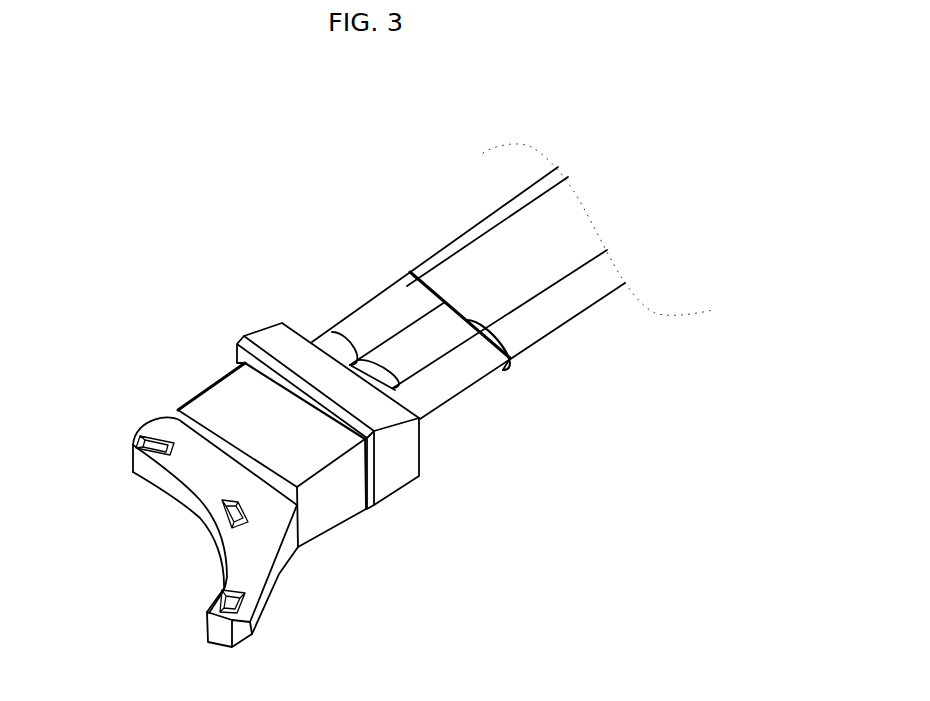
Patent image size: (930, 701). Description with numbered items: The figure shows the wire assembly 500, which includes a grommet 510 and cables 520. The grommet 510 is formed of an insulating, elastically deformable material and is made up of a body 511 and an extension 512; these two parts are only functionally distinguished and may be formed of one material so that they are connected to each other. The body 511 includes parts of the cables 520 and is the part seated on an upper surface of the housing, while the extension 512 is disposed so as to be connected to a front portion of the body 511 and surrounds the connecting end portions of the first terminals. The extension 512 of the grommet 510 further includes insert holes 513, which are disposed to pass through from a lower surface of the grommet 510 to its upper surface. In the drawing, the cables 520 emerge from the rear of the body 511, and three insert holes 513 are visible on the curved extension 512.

The wire assembly 500 is at (118, 130).
The grommet 510 is at (270, 449).
The body 511 is at (229, 407).
The extension 512 is at (168, 423).
The insert holes 513 is at (146, 439).
The cables 520 is at (373, 322).